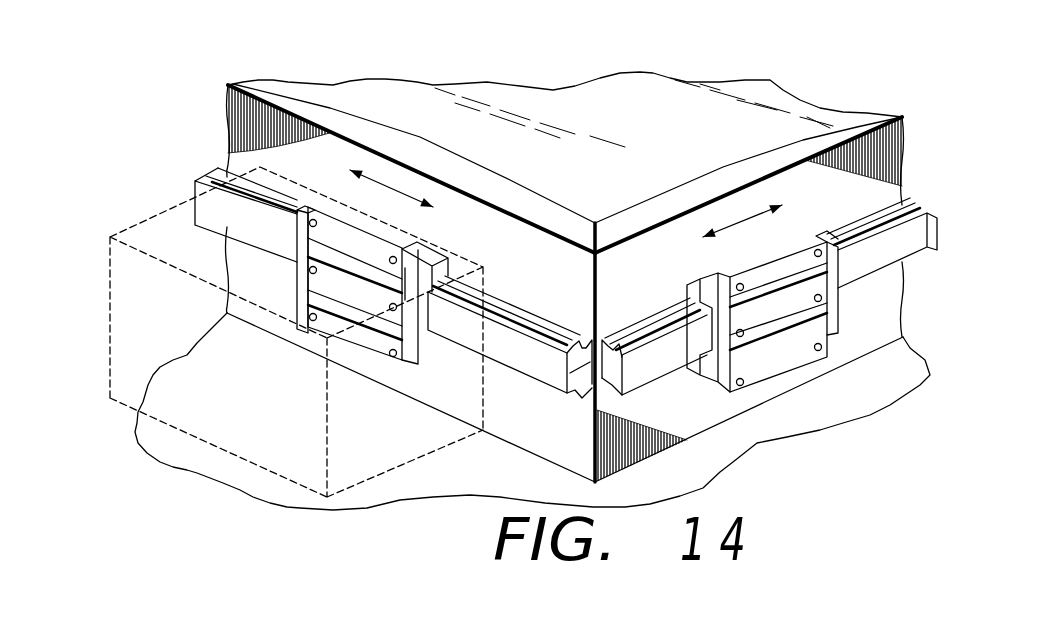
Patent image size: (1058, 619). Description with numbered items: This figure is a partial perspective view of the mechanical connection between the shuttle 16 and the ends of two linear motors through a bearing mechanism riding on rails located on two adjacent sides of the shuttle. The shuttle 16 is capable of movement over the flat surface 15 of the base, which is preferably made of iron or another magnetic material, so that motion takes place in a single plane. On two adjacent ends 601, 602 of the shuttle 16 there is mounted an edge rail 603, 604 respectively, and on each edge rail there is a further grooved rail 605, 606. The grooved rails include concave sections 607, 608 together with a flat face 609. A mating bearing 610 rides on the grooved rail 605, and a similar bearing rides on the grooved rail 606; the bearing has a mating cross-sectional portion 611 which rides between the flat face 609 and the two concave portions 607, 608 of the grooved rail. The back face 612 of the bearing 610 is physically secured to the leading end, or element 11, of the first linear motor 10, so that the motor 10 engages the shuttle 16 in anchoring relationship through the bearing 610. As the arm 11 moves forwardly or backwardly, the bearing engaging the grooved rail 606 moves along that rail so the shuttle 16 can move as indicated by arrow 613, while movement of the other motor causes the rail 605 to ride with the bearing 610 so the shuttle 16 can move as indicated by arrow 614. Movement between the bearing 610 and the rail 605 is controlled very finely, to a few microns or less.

The first linear motor 10 is at (145, 204).
The element 11 is at (172, 328).
The flat surface 15 is at (868, 407).
The shuttle 16 is at (641, 111).
The end of the shuttle 601 is at (337, 106).
The end of the shuttle 602 is at (822, 108).
The edge rail 603 is at (267, 86).
The edge rail 604 is at (877, 110).
The grooved rail 605 is at (232, 215).
The grooved rail 606 is at (748, 308).
The concave section 607 is at (573, 342).
The concave section 608 is at (580, 390).
The flat face 609 is at (510, 337).
The mating bearing 610 is at (358, 320).
The mating cross-sectional portion 611 is at (400, 362).
The back face 612 is at (323, 280).
The arrow 613 is at (740, 212).
The arrow 614 is at (407, 173).